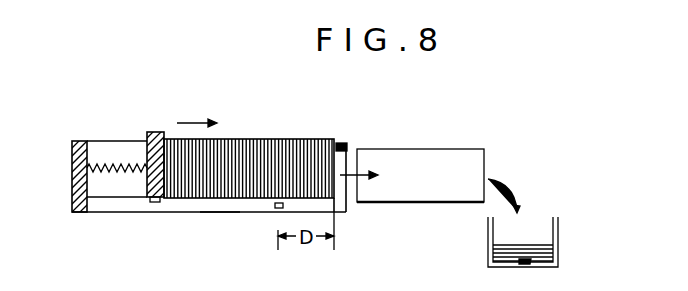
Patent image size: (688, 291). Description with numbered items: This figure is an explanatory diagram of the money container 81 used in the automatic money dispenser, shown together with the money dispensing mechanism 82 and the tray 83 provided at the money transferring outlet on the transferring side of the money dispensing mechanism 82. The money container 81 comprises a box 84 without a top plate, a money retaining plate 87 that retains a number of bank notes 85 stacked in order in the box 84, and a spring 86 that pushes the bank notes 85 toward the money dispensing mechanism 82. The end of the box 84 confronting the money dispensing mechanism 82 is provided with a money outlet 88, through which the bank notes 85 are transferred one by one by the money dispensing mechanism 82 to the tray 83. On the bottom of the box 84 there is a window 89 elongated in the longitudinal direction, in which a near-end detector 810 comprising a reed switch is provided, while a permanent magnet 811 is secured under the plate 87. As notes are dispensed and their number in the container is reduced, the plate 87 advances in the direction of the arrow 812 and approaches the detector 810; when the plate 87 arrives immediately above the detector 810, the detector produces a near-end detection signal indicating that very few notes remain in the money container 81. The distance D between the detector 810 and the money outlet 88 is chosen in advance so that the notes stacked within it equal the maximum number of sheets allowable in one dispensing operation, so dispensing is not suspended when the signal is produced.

The money container 81 is at (102, 141).
The money dispensing mechanism 82 is at (435, 148).
The tray 83 is at (559, 232).
The box 84 is at (73, 169).
The bank notes 85 is at (255, 139).
The spring 86 is at (121, 172).
The money retaining plate 87 is at (157, 132).
The money outlet 88 is at (369, 135).
The window 89 is at (218, 212).
The near-end detector 810 is at (277, 208).
The permanent magnet 811 is at (156, 202).
The arrow 812 is at (194, 122).